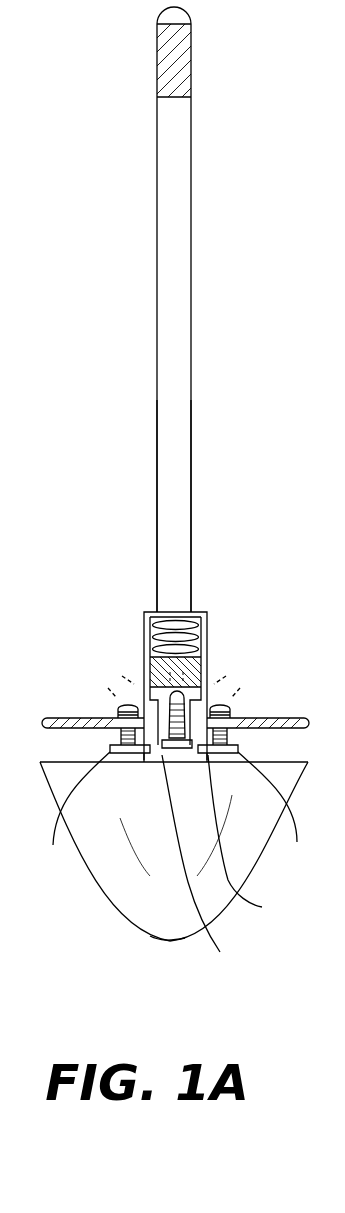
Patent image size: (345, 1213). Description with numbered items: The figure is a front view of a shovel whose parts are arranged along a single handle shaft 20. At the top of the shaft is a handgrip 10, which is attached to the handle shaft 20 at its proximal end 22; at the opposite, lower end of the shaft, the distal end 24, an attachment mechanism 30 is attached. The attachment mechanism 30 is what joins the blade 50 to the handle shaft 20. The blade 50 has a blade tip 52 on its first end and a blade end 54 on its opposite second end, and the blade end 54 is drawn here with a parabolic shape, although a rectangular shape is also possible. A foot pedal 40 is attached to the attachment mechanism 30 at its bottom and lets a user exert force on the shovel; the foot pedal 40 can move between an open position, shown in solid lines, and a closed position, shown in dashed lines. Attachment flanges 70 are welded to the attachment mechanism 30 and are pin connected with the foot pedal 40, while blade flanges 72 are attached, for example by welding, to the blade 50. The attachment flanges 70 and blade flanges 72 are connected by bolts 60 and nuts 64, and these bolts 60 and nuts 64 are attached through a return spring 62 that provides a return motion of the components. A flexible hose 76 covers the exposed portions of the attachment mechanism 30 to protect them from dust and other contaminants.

The handgrip 10 is at (157, 65).
The handle shaft 20 is at (157, 300).
The proximal end 22 is at (191, 145).
The distal end 24 is at (191, 555).
The attachment mechanism 30 is at (144, 628).
The foot pedal 40 is at (50, 716).
The blade 50 is at (118, 918).
The blade tip 52 is at (262, 907).
The blade end 54 is at (172, 942).
The bolt 60 is at (126, 705).
The return spring 62 is at (117, 740).
The nut 64 is at (172, 812).
The attachment flange 70 is at (118, 708).
The blade flange 72 is at (128, 755).
The flexible hose 76 is at (203, 860).